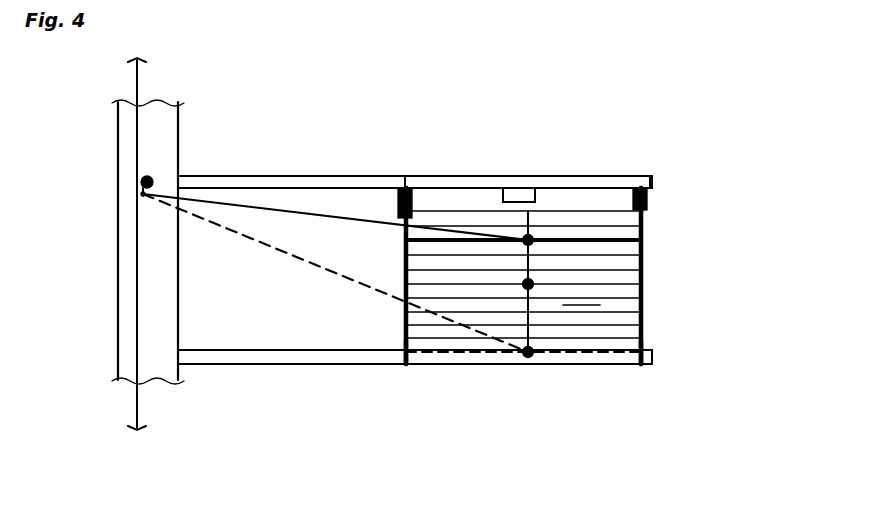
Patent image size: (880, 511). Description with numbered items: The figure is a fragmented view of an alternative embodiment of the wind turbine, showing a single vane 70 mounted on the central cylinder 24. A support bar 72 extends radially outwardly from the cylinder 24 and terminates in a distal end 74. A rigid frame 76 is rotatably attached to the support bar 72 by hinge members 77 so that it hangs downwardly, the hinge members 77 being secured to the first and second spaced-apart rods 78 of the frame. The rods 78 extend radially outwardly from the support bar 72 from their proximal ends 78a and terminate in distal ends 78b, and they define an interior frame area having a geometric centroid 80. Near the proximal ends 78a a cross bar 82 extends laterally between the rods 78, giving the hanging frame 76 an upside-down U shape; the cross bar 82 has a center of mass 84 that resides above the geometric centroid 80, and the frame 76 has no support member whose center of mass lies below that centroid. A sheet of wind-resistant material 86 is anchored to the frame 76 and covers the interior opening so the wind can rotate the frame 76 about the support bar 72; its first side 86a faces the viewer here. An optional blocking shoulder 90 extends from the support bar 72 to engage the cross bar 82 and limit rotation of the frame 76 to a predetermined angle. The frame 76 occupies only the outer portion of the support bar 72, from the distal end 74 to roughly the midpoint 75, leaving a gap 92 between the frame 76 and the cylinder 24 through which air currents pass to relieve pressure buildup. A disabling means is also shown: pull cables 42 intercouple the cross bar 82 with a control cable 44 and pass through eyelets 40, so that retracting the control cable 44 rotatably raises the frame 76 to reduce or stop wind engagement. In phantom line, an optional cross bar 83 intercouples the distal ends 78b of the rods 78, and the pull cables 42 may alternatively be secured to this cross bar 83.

The cylinder 24 is at (167, 127).
The eyelets 40 is at (144, 197).
The pull cables 42 is at (222, 203).
The control cable 44 is at (136, 285).
The vane 70 is at (646, 125).
The support bar 72 is at (287, 174).
The distal end 74 is at (652, 183).
The midpoint 75 is at (405, 178).
The rigid frame 76 is at (680, 254).
The hinge members 77 is at (398, 190).
The rods 78 is at (403, 258).
The proximal ends 78a is at (398, 212).
The distal ends 78b is at (403, 367).
The geometric centroid 80 is at (523, 284).
The cross bar 82 is at (645, 232).
The cross bar 83 is at (472, 350).
The center of mass 84 is at (532, 228).
The sheet of material 86 is at (550, 323).
The first side 86a is at (582, 294).
The blocking shoulder 90 is at (518, 193).
The gap 92 is at (228, 306).